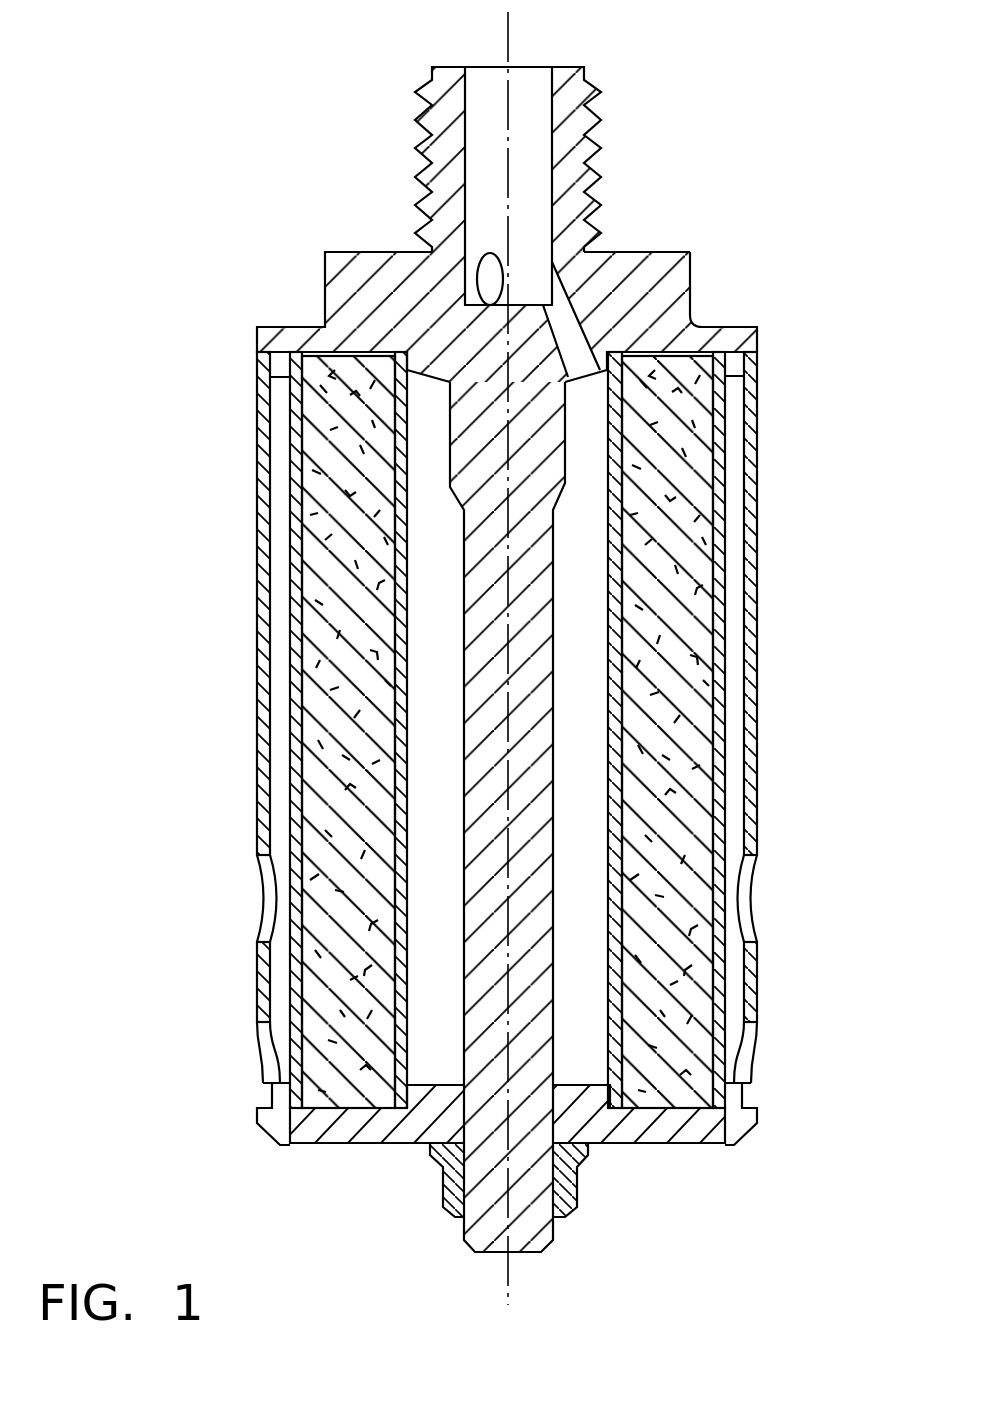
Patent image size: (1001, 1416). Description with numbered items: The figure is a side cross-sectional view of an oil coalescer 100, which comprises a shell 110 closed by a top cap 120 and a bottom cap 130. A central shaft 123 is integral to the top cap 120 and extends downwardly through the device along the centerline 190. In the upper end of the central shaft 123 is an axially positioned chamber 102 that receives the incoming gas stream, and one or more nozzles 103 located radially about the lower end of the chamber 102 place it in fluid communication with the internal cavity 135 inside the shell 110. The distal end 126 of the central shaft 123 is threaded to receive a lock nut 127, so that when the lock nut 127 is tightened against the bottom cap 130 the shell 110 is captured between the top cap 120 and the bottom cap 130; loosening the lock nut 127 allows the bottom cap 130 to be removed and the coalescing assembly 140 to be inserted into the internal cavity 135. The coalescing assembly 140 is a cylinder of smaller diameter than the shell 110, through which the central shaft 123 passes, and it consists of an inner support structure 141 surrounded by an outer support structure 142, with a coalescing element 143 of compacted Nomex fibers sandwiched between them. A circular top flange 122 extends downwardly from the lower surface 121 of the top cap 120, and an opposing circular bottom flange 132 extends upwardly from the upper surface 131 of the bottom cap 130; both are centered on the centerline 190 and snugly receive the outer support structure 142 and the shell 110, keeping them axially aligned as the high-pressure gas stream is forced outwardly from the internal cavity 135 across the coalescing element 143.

The oil coalescer 100 is at (197, 66).
The centerline 190 is at (507, 43).
The chamber 102 is at (540, 77).
The nozzle 103 is at (565, 318).
The top cap 120 is at (295, 325).
The lower surface 121 is at (702, 323).
The top flange 122 is at (280, 378).
The shell 110 is at (258, 575).
The central shaft 123 is at (464, 643).
The distal end 126 is at (560, 1262).
The lock nut 127 is at (443, 1188).
The bottom cap 130 is at (318, 1148).
The upper surface 131 is at (573, 1085).
The bottom flange 132 is at (268, 1090).
The internal cavity 135 is at (602, 611).
The coalescing assembly 140 is at (420, 752).
The inner support structure 141 is at (407, 1063).
The outer support structure 142 is at (296, 920).
The coalescing element 143 is at (330, 735).